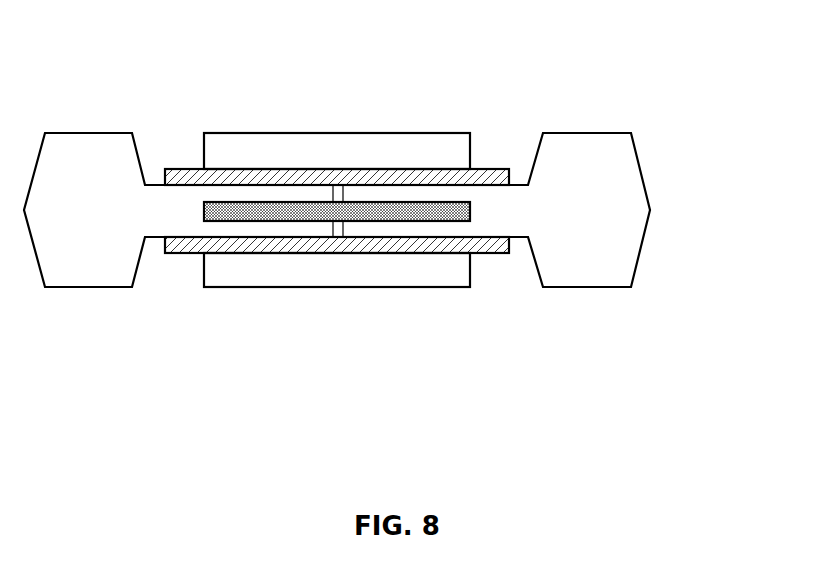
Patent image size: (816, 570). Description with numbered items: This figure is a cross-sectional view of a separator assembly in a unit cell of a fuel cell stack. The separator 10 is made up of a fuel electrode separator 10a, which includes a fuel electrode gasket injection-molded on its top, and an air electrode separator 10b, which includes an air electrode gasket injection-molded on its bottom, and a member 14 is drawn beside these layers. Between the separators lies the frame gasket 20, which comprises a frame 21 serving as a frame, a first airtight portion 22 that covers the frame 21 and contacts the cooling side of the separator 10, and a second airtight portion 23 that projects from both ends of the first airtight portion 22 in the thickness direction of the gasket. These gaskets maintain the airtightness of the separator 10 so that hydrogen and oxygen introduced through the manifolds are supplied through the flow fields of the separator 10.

The separator 10 is at (127, 352).
The fuel electrode separator 10a is at (155, 187).
The air electrode separator 10b is at (179, 247).
The insulating block 14 is at (376, 145).
The frame gasket 20 is at (652, 170).
The frame 21 is at (236, 202).
The first airtight portion 22 is at (487, 172).
The second airtight portion 23 is at (596, 133).